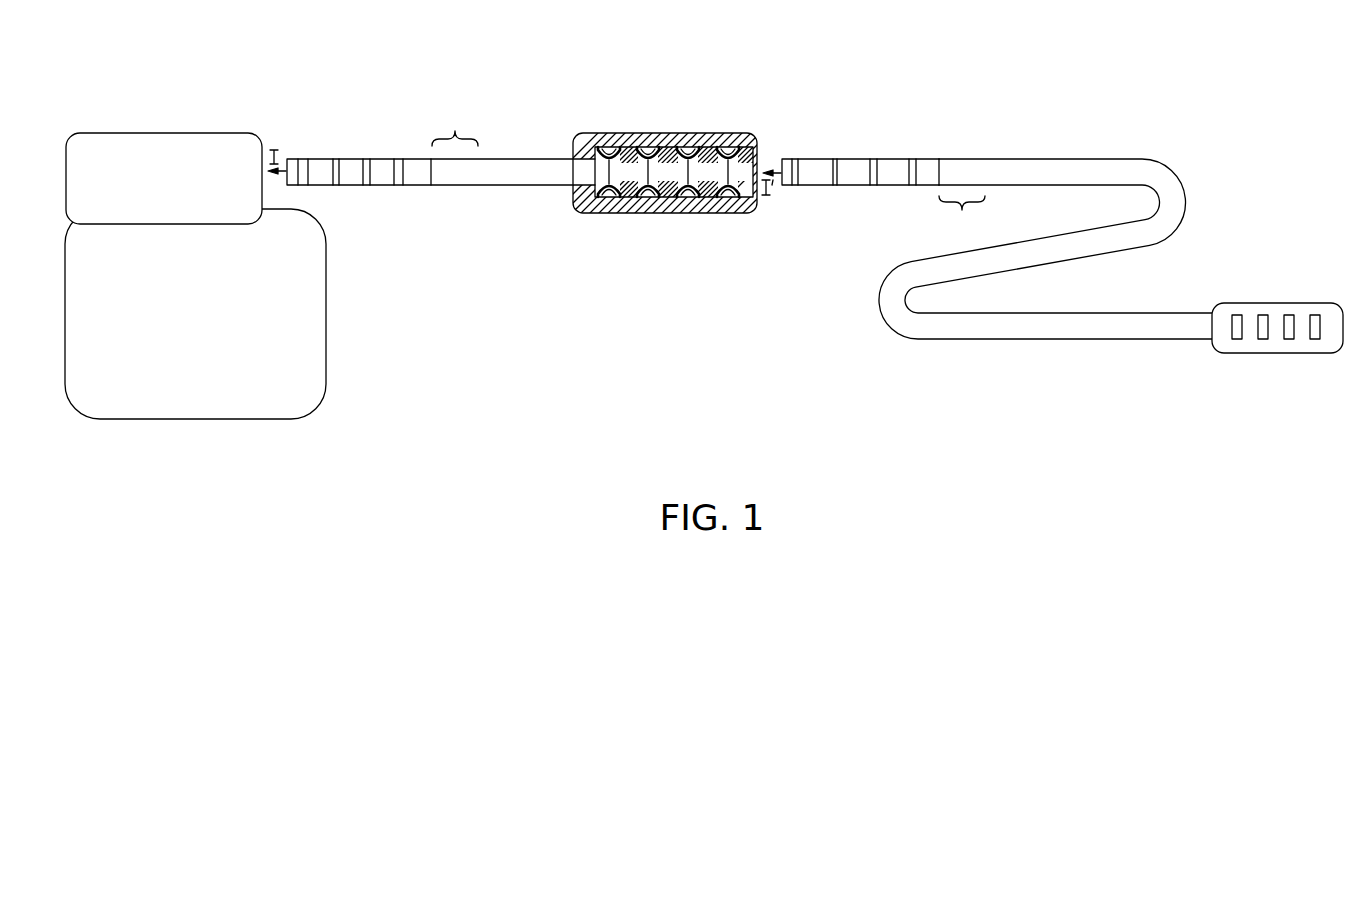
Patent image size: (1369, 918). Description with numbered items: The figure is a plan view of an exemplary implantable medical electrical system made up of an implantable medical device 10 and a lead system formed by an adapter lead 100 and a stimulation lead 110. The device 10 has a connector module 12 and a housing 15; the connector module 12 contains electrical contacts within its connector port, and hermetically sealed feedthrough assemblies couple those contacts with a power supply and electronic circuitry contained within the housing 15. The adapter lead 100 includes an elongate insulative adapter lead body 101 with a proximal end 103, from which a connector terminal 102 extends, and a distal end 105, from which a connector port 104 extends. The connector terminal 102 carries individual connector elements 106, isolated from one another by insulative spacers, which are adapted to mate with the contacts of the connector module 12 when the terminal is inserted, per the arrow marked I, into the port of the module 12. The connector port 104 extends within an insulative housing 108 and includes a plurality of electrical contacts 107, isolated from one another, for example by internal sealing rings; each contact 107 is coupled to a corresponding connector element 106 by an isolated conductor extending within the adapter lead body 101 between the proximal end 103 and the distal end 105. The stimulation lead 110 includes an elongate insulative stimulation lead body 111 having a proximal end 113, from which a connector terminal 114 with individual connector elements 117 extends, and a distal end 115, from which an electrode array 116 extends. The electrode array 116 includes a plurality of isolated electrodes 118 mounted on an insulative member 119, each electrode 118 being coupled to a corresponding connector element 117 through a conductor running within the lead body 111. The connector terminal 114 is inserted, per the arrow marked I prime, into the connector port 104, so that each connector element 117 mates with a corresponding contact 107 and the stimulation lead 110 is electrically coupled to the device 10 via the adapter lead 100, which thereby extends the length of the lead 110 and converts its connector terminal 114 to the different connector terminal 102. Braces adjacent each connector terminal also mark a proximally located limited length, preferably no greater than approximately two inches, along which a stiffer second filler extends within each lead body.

The implantable medical device 10 is at (104, 103).
The connector module 12 is at (208, 178).
The housing 15 is at (228, 378).
The adapter lead 100 is at (546, 258).
The adapter lead body 101 is at (496, 145).
The connector terminal 102 is at (432, 146).
The proximal end 103 is at (431, 185).
The connector port 104 is at (752, 163).
The distal end 105 is at (673, 173).
The connector elements 106 is at (303, 185).
The electrical contacts 107 is at (728, 150).
The insulative housing 108 is at (667, 202).
The stimulation lead 110 is at (886, 389).
The stimulation lead body 111 is at (1182, 155).
The proximal end 113 is at (940, 160).
The connector terminal 114 is at (783, 146).
The distal end 115 is at (1267, 334).
The electrode array 116 is at (1210, 342).
The connector elements 117 is at (795, 185).
The electrodes 118 is at (1315, 315).
The insulative member 119 is at (1330, 312).